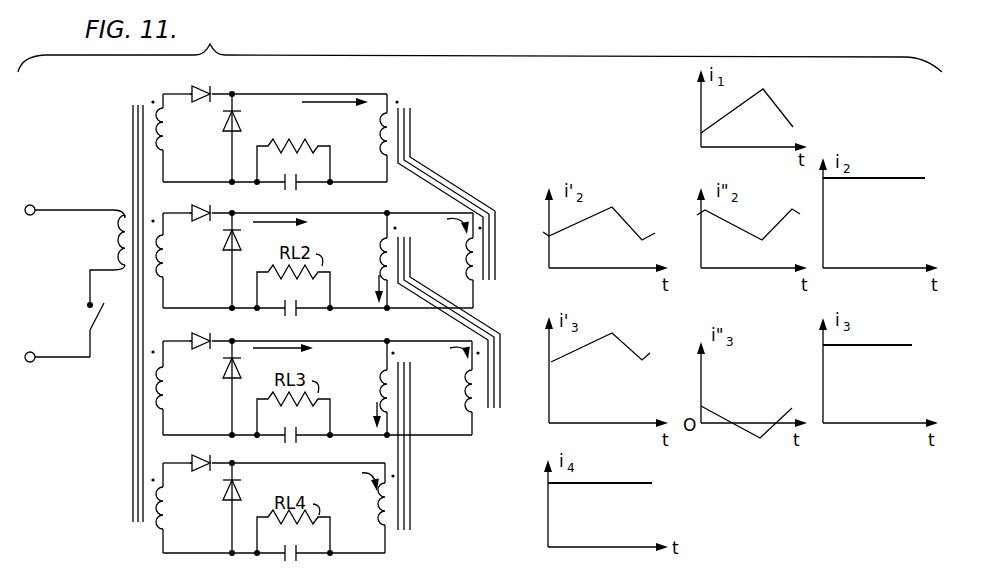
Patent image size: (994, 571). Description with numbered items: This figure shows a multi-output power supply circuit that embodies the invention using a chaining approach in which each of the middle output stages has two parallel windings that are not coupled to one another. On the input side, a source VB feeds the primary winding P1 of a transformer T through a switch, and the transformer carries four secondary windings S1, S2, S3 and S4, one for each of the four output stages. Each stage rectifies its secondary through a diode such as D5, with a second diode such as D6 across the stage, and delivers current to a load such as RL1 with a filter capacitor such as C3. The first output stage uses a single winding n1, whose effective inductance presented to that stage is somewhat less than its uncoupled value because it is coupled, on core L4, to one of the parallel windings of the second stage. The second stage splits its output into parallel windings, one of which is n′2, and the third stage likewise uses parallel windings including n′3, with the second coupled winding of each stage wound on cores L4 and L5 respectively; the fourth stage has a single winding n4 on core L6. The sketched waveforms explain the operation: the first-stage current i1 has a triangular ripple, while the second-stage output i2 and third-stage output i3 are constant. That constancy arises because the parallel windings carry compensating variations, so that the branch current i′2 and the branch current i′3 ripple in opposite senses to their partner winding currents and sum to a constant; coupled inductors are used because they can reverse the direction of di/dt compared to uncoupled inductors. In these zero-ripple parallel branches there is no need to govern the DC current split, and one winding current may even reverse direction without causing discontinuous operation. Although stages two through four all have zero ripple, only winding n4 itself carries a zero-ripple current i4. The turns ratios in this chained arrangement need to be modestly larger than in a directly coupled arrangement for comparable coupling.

The battery voltage source terminals VB is at (66, 283).
The primary winding P1 is at (118, 247).
The transformer core T is at (138, 328).
The rectifier diode D5 is at (207, 101).
The free-wheeling diode D6 is at (240, 130).
The secondary winding 1 S1 is at (169, 148).
The secondary winding 2 S2 is at (169, 257).
The secondary winding 3 S3 is at (170, 381).
The secondary winding 4 S4 is at (170, 508).
The load resistor 1 RL1 is at (316, 146).
The filter capacitor C3 is at (283, 184).
The winding n1 is at (381, 148).
The parallel winding n′2 is at (382, 259).
The parallel winding n′3 is at (382, 385).
The winding n4 is at (377, 514).
The output current i1 is at (335, 115).
The output current i2 is at (280, 233).
The winding current i'2 i′2 is at (360, 286).
The output current i3 is at (283, 360).
The winding current i'3 i′3 is at (363, 415).
The output current i4 is at (362, 484).
The coupled inductor core L4 is at (449, 258).
The coupled inductor core L5 is at (450, 446).
The inductor core L6 is at (407, 549).